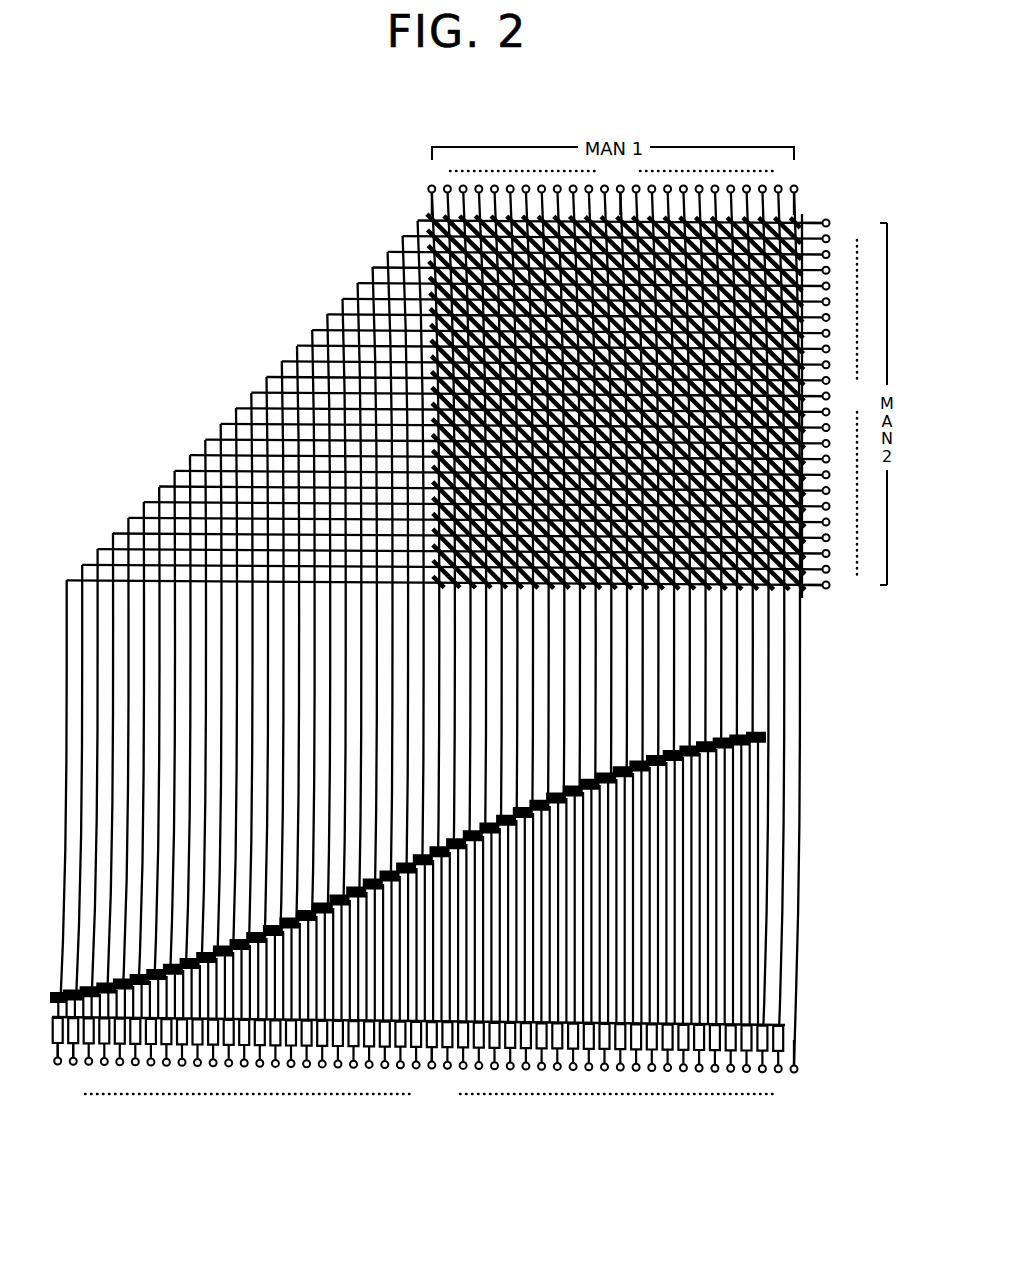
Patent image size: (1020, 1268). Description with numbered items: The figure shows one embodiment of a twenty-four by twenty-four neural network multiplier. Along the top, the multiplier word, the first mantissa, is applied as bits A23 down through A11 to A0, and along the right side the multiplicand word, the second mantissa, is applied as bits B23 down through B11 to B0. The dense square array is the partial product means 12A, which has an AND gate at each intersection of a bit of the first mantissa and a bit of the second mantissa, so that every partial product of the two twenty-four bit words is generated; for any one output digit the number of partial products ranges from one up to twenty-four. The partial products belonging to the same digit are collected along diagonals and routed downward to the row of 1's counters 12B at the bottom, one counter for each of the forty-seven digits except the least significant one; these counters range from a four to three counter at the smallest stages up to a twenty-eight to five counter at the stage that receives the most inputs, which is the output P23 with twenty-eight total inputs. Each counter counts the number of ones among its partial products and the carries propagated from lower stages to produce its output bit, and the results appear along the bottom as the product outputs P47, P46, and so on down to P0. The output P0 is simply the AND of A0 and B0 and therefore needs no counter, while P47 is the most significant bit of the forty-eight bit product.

The partial product means 12A is at (814, 215).
The 1's counters 12B is at (812, 1034).
The multiplier bit A0 is at (794, 188).
The multiplier bit A11 is at (616, 188).
The multiplier bit A23 is at (426, 188).
The multiplicand bit B0 is at (837, 224).
The multiplicand bit B11 is at (840, 397).
The multiplicand bit B23 is at (841, 585).
The output P0 is at (795, 1073).
The output P23 is at (435, 1075).
The output P46 is at (75, 1065).
The output P47 is at (56, 1065).